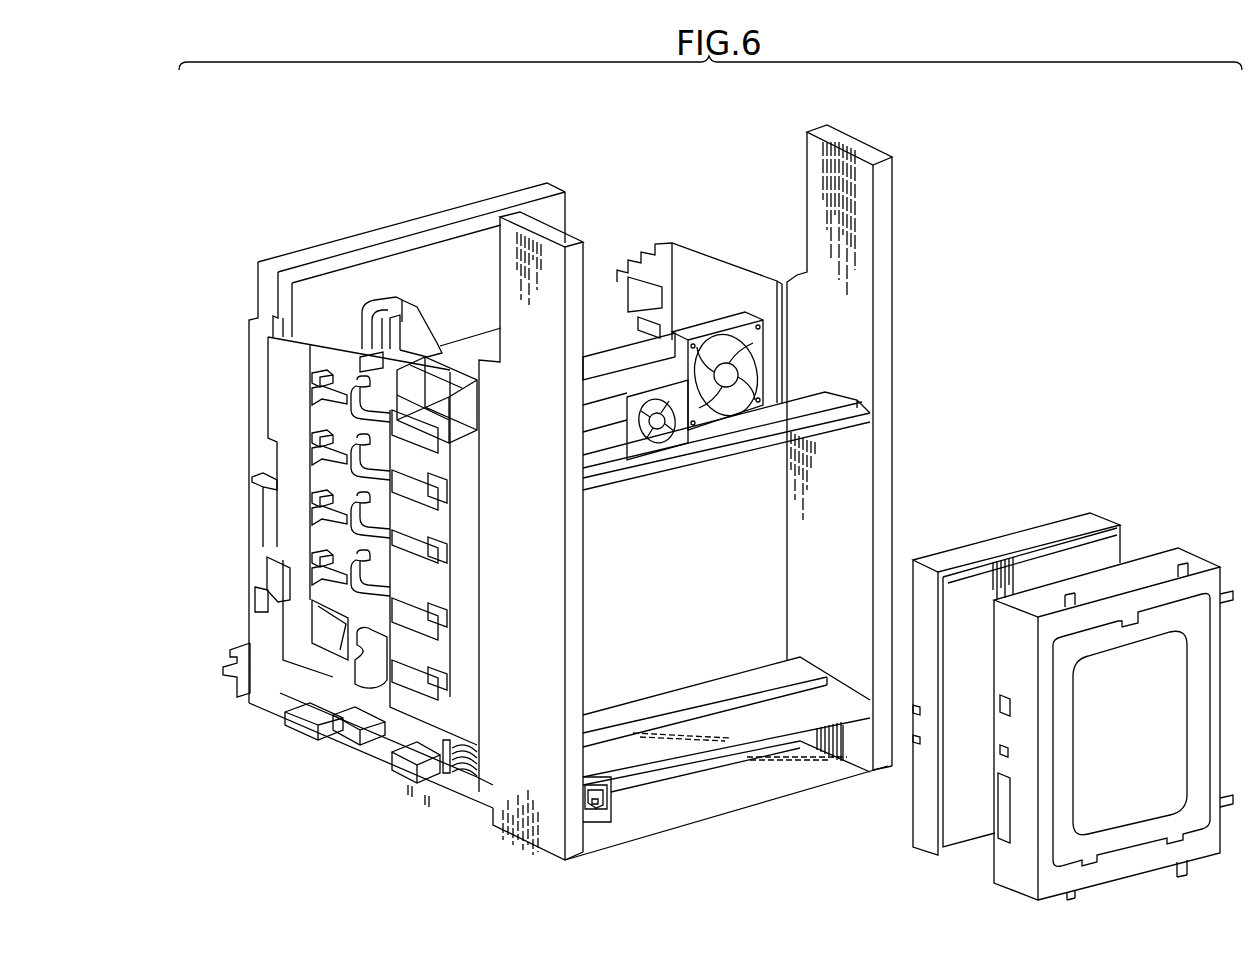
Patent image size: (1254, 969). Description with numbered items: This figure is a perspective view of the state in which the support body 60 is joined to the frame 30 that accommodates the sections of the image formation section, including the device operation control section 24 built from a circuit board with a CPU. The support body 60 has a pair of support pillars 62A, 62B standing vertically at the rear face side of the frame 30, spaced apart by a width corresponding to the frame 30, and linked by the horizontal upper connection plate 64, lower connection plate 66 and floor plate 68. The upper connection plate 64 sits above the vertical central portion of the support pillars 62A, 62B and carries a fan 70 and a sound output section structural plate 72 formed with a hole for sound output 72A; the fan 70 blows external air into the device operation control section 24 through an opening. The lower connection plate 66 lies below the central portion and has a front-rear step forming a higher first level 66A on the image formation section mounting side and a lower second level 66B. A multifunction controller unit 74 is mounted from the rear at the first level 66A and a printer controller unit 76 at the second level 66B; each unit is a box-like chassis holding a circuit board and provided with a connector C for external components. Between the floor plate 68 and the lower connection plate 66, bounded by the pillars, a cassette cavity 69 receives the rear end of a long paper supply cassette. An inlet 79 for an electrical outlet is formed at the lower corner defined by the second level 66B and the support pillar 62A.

The support body 60 is at (858, 137).
The support pillar 62A is at (882, 466).
The support pillar 62B is at (490, 792).
The device operation control section 24 is at (457, 697).
The frame 30 is at (259, 717).
The fan 70 is at (728, 318).
The sound output section structural plate 72 is at (640, 397).
The hole for sound output 72A is at (635, 397).
The upper connection plate 64 is at (827, 400).
The lower connection plate 66 is at (741, 630).
The first level 66A is at (648, 703).
The second level 66B is at (713, 733).
The cassette cavity 69 is at (742, 798).
The floor plate 68 is at (668, 815).
The inlet 79 is at (591, 815).
The multifunction controller unit 74 is at (1086, 520).
The printer controller unit 76 is at (1168, 557).
The connector tabs C is at (915, 708).